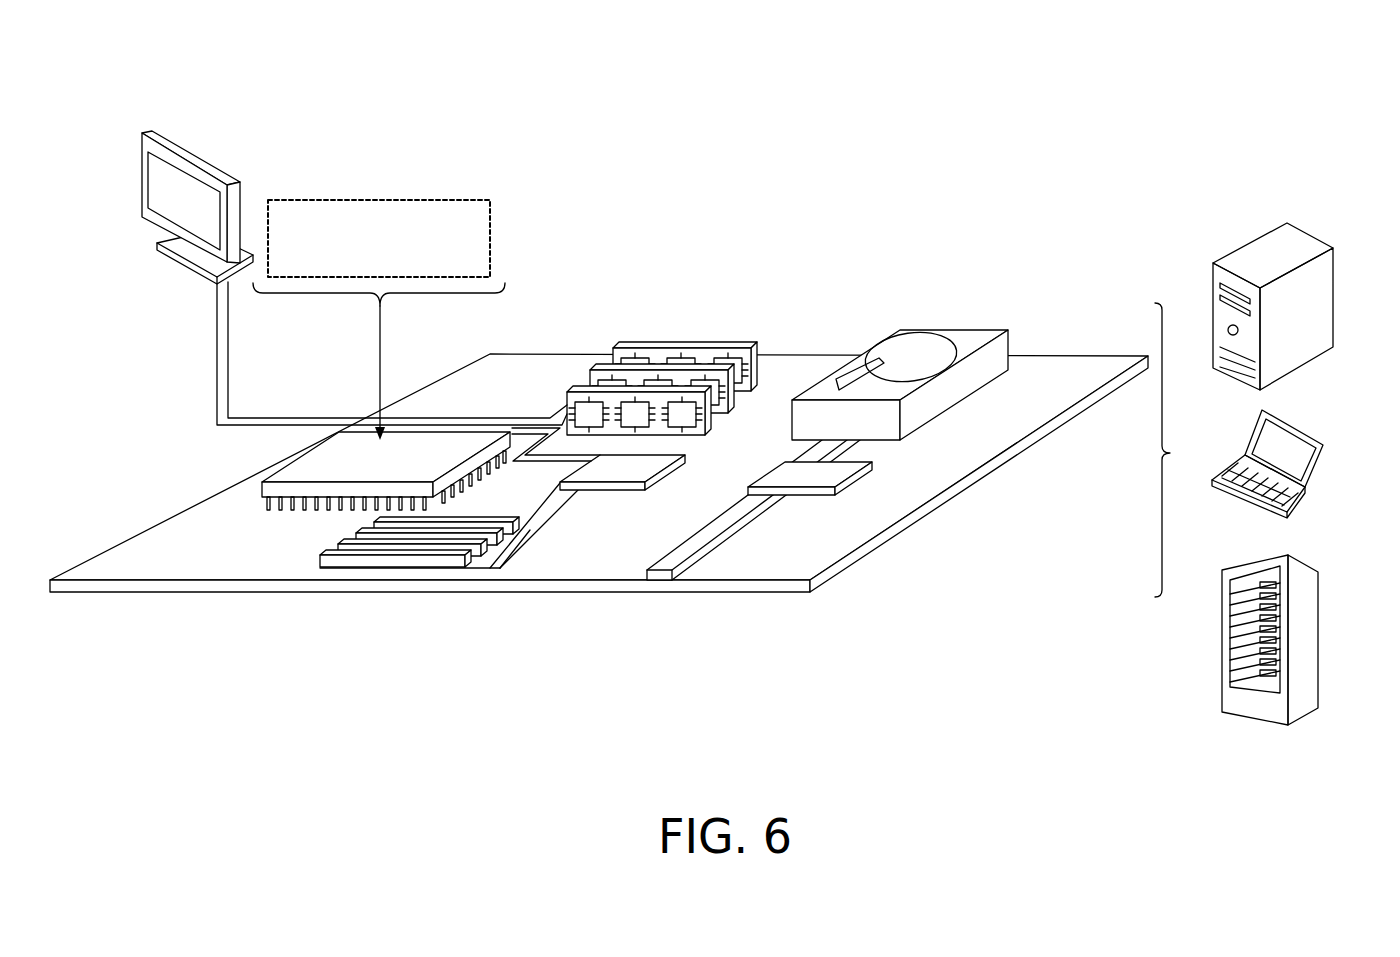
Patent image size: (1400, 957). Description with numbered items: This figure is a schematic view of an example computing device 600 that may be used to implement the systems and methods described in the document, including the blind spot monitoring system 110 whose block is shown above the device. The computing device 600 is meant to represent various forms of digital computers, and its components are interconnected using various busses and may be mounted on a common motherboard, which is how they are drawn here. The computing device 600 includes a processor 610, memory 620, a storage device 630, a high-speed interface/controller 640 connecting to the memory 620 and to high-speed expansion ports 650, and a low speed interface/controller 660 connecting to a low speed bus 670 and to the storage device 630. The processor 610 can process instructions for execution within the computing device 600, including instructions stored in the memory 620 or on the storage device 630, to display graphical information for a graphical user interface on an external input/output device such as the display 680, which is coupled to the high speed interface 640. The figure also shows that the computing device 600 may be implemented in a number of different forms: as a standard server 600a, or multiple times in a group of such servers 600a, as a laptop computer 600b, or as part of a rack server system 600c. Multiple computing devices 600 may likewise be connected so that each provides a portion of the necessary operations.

The computing device 600 is at (968, 103).
The standard server 600a is at (1243, 243).
The laptop computer 600b is at (1305, 427).
The rack server system 600c is at (1310, 620).
The processor 610 is at (262, 484).
The memory 620 is at (683, 352).
The storage device 630 is at (947, 330).
The high-speed interface/controller 640 is at (628, 488).
The high-speed expansion ports 650 is at (320, 557).
The low speed interface/controller 660 is at (800, 472).
The low speed bus 670 is at (675, 582).
The display 680 is at (142, 185).
The blind spot monitoring system 110 is at (379, 320).